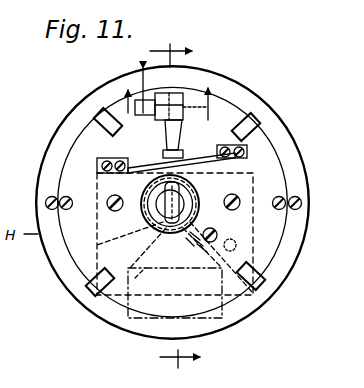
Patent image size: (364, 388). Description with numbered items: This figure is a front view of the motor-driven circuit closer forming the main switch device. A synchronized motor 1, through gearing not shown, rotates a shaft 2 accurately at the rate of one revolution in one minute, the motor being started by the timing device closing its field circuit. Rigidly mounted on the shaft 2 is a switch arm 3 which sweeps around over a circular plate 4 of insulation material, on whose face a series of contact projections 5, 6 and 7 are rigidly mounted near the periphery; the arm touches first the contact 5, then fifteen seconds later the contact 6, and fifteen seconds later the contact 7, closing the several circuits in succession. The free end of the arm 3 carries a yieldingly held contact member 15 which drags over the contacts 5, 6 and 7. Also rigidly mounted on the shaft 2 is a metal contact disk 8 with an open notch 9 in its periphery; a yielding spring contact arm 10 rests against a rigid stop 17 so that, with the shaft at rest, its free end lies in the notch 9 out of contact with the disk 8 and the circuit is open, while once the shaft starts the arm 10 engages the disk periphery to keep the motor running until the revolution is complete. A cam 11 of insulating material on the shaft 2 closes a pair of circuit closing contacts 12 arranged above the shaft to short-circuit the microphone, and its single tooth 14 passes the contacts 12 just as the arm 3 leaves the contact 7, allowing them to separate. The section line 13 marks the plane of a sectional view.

The synchronized motor 1 is at (132, 328).
The rotatable shaft 2 is at (162, 234).
The switch arm 3 is at (205, 137).
The circular plate 4 is at (60, 190).
The contact 5 is at (249, 128).
The contact 6 is at (258, 283).
The contact 7 is at (94, 294).
The metal contact disk 8 is at (97, 262).
The open notch 9 is at (174, 233).
The yielding contact arm 10 is at (175, 293).
The cam 11 is at (200, 196).
The circuit closing contacts 12 is at (165, 150).
The section line 13- 13 is at (175, 207).
The tooth 14 is at (214, 229).
The contact member 15 is at (150, 62).
The rigid stop 17 is at (148, 280).